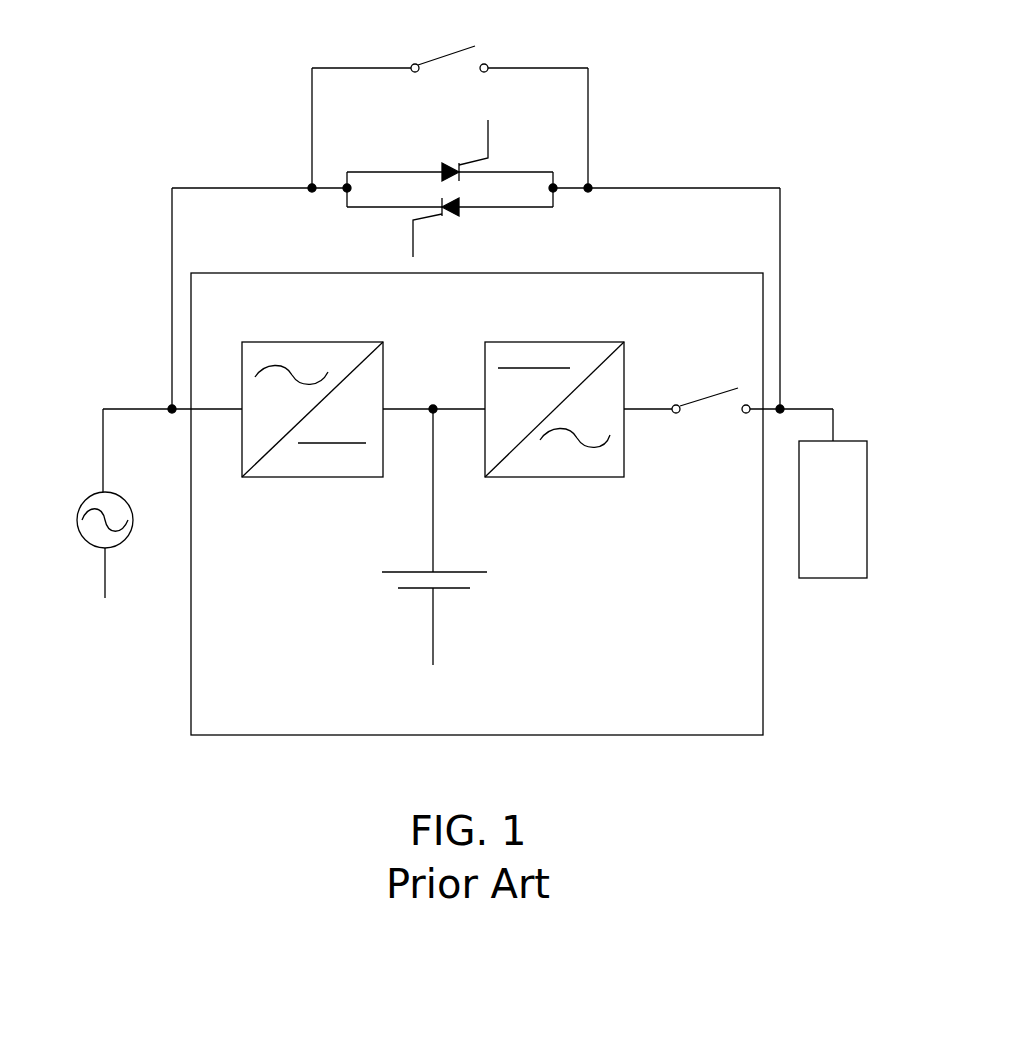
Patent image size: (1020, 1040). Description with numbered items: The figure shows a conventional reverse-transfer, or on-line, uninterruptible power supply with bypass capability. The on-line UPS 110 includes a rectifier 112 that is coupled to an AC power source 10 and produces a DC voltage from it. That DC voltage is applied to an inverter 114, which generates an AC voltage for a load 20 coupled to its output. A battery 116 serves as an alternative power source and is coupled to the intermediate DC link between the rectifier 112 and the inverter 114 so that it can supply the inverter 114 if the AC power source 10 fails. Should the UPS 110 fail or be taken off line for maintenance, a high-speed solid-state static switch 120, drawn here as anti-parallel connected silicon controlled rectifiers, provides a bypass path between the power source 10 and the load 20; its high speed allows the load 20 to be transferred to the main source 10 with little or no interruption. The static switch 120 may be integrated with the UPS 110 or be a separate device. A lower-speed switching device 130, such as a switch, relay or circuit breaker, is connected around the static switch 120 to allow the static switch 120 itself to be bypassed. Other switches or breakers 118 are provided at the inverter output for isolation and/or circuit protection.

The AC power source 10 is at (78, 524).
The load 20 is at (869, 511).
The on-line UPS 110 is at (477, 735).
The rectifier 112 is at (313, 342).
The inverter 114 is at (555, 342).
The battery 116 is at (522, 573).
The switches/breakers 118 is at (705, 439).
The static switch 120 is at (515, 148).
The lower-speed switching device 130 is at (513, 37).